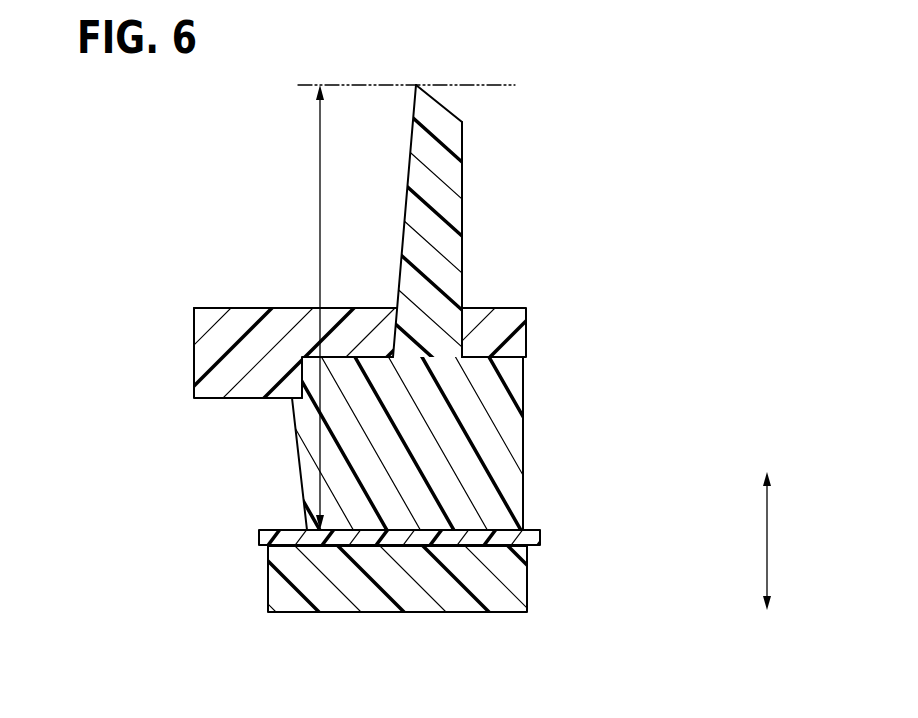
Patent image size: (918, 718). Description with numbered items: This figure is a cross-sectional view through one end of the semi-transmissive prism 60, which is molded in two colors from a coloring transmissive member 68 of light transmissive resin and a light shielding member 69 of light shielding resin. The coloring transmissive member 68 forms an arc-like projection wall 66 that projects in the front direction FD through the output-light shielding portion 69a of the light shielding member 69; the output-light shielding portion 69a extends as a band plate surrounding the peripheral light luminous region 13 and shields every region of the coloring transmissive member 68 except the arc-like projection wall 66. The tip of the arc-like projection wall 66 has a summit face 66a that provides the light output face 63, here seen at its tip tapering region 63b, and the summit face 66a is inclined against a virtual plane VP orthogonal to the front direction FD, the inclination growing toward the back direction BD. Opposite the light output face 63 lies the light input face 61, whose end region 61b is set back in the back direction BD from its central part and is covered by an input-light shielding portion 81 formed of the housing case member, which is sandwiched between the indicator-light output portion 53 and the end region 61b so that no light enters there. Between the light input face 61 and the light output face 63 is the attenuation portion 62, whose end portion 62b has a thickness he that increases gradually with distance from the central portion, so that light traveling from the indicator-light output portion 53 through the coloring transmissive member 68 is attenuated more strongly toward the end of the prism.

The peripheral light luminous region 13 is at (456, 97).
The virtual plane VP is at (497, 82).
The thickness of end portion of attenuation portion he is at (320, 161).
The indicator-light output portion 53 is at (523, 522).
The semi-transmissive prism 60 is at (230, 168).
The light input face 61 is at (498, 494).
The end region of light input face 61b is at (465, 530).
The attenuation portion 62 is at (493, 221).
The end portion of attenuation portion 62b is at (442, 207).
The light output face 63 is at (532, 73).
The tip tapering region 63b is at (462, 122).
The arc-like projection wall 66 is at (462, 238).
The summit face 66a is at (455, 118).
The coloring transmissive member 68 is at (398, 285).
The light shielding member 69 is at (251, 307).
The output-light shielding portion 69a is at (288, 308).
The input-light shielding portion 81 is at (307, 530).
The front direction FD is at (785, 533).
The back direction BD is at (786, 603).